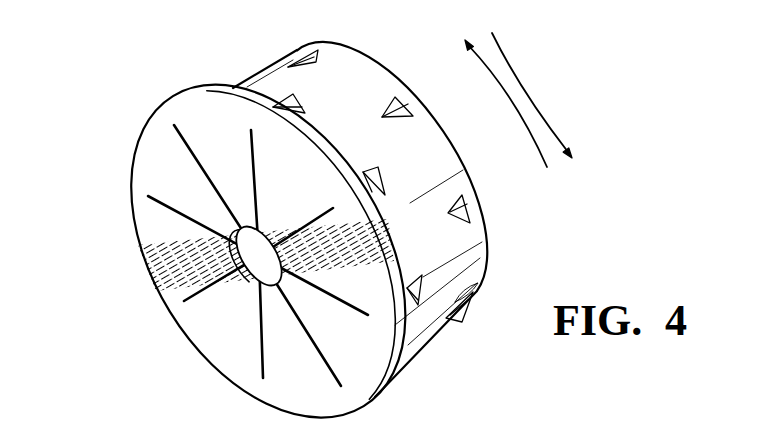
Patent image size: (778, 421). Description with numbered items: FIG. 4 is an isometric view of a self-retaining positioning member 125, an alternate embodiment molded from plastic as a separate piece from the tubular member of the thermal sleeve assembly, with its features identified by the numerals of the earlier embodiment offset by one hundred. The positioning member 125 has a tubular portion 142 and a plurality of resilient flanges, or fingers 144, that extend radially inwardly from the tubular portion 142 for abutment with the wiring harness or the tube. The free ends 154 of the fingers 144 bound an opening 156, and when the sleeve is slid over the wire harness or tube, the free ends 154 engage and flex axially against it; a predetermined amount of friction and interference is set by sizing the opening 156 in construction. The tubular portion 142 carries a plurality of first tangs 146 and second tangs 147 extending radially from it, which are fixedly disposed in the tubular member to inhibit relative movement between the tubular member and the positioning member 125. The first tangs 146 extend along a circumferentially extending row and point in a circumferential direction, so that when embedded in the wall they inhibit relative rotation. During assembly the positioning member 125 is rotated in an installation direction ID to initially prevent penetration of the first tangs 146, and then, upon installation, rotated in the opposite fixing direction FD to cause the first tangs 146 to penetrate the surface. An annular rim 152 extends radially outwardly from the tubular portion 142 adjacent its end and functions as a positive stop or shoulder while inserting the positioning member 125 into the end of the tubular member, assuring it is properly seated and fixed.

The positioning member 125 is at (150, 102).
The tubular portion 142 is at (478, 318).
The fingers 144 is at (235, 305).
The first tangs 146 is at (306, 103).
The second tangs 147 is at (299, 52).
The annular rim 152 is at (218, 92).
The free ends of the fingers 154 is at (251, 261).
The opening 156 is at (270, 253).
The fixing direction FD is at (547, 97).
The installation direction ID is at (510, 95).